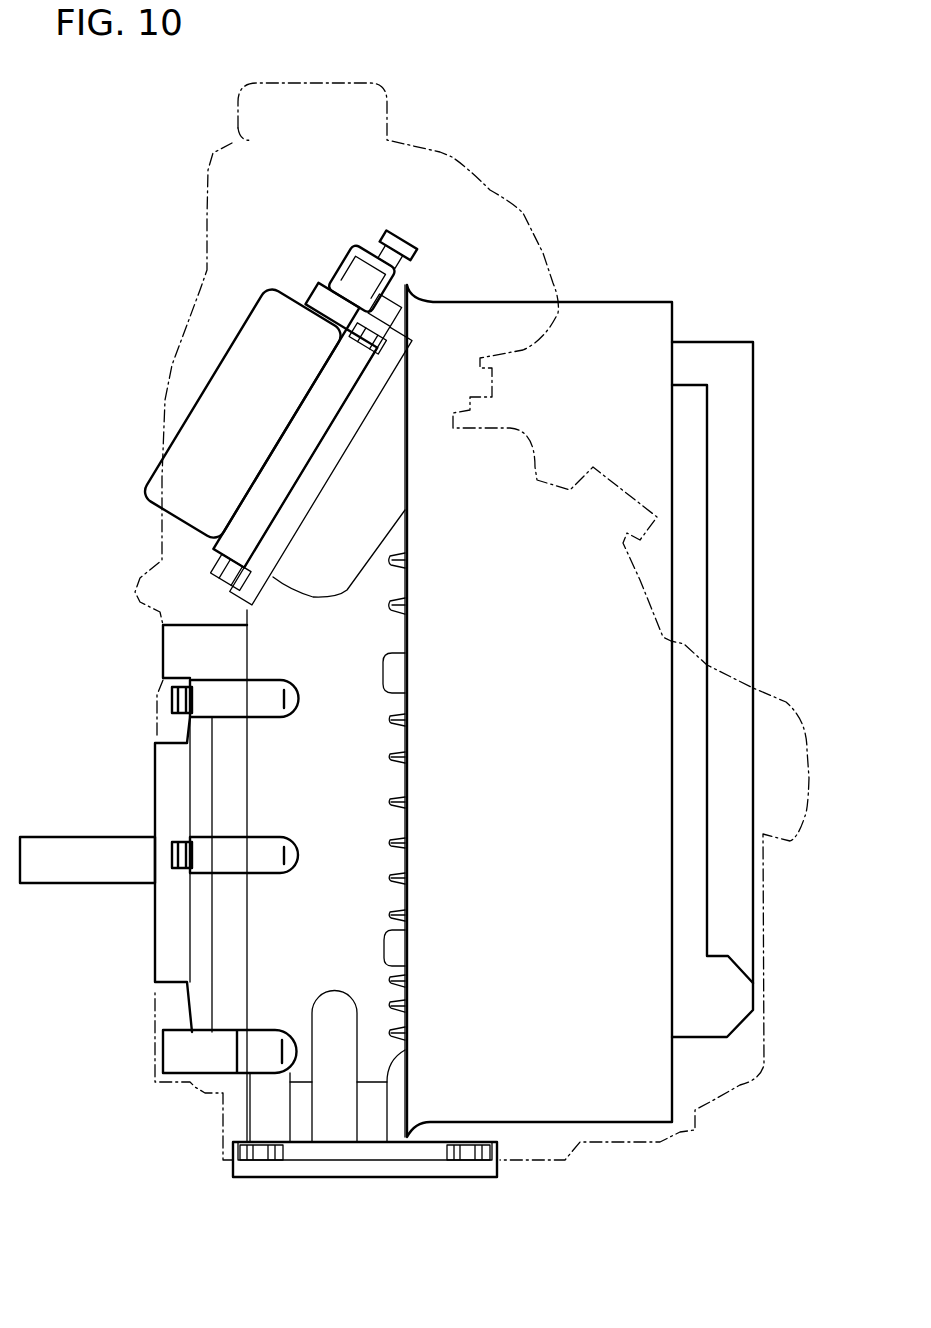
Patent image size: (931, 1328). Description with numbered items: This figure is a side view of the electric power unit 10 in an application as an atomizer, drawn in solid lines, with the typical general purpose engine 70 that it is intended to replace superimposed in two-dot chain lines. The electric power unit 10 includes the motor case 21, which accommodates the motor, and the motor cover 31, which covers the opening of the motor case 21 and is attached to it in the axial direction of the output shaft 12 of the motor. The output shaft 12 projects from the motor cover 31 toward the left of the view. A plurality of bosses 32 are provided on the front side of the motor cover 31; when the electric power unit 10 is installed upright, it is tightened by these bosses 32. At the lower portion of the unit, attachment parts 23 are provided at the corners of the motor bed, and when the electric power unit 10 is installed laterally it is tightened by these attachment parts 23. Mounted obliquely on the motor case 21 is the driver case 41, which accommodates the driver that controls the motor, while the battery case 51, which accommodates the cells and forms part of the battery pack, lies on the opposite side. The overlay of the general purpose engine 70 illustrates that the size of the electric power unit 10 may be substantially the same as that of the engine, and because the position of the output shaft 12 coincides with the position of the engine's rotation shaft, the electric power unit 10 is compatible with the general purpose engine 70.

The electric power unit 10 is at (230, 330).
The output shaft 12 is at (47, 847).
The motor case 21 is at (270, 789).
The attachment parts 23 is at (436, 1152).
The motor cover 31 is at (172, 936).
The bosses 32 is at (233, 662).
The driver case 41 is at (207, 380).
The battery case 51 is at (700, 338).
The general purpose engine 70 is at (438, 150).